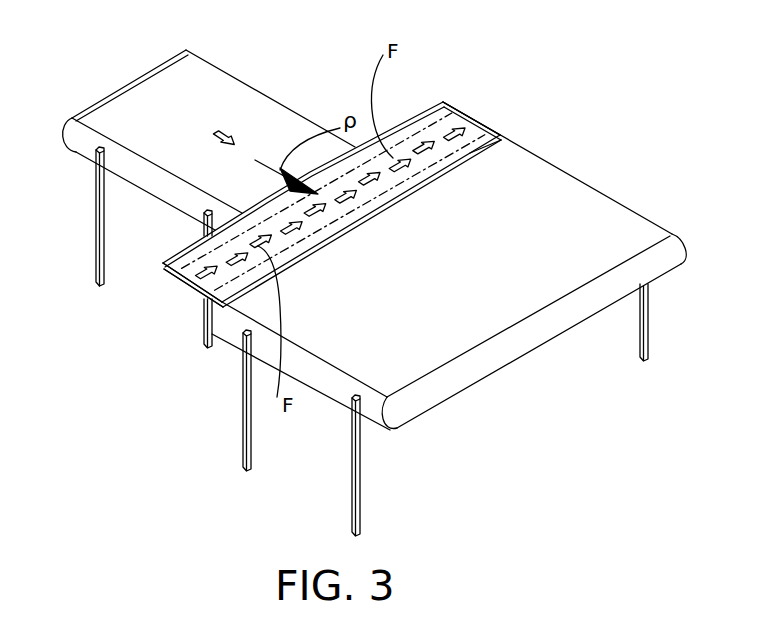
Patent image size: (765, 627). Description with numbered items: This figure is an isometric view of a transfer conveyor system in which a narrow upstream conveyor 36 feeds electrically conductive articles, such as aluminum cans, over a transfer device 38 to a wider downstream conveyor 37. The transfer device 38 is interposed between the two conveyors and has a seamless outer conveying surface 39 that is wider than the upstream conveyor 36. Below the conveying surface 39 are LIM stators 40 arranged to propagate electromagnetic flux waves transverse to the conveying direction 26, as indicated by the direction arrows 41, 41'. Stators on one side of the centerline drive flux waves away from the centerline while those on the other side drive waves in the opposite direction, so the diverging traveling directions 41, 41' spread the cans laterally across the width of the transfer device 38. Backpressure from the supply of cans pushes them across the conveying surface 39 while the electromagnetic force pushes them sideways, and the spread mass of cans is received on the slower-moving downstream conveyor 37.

The upstream conveyor 36 is at (231, 84).
The downstream conveyor 37 is at (573, 188).
The transfer device 38 is at (480, 119).
The conveying surface 39 is at (433, 112).
The LIM stators 40 is at (452, 101).
The direction arrow 41 is at (514, 141).
The direction arrow 41' is at (193, 313).
The conveying direction 26 is at (237, 133).